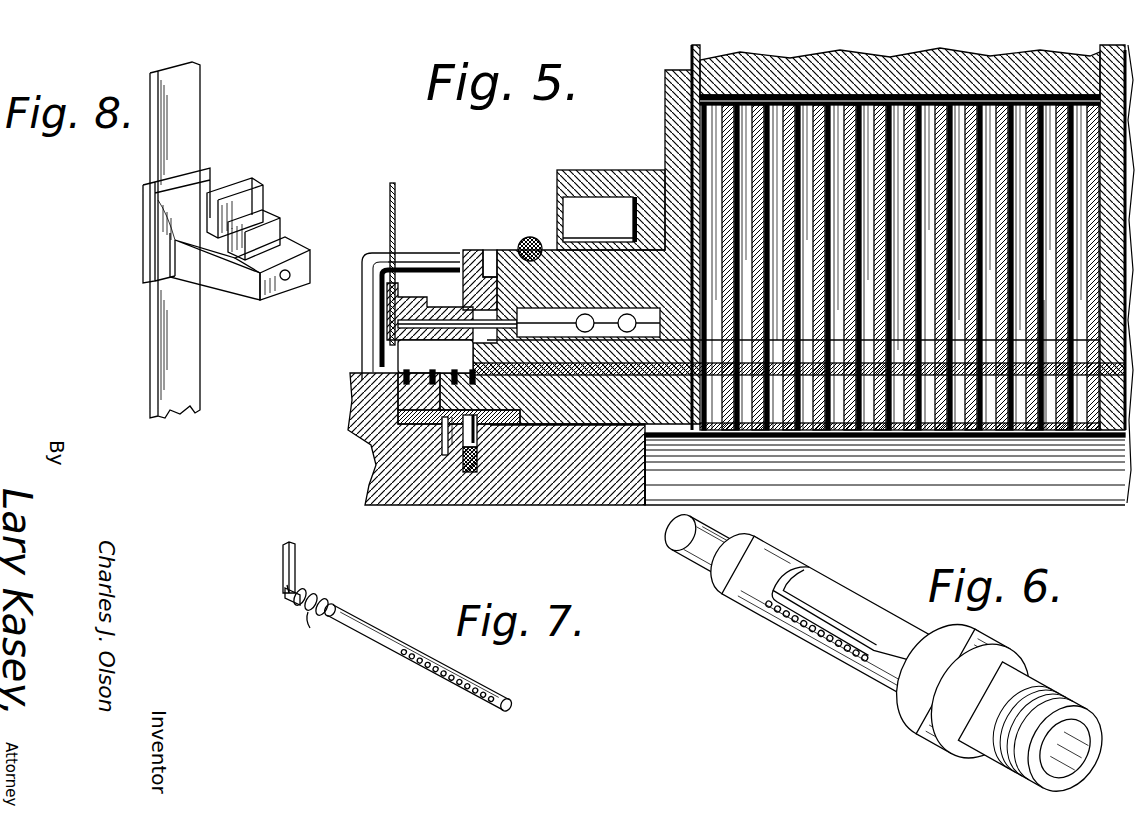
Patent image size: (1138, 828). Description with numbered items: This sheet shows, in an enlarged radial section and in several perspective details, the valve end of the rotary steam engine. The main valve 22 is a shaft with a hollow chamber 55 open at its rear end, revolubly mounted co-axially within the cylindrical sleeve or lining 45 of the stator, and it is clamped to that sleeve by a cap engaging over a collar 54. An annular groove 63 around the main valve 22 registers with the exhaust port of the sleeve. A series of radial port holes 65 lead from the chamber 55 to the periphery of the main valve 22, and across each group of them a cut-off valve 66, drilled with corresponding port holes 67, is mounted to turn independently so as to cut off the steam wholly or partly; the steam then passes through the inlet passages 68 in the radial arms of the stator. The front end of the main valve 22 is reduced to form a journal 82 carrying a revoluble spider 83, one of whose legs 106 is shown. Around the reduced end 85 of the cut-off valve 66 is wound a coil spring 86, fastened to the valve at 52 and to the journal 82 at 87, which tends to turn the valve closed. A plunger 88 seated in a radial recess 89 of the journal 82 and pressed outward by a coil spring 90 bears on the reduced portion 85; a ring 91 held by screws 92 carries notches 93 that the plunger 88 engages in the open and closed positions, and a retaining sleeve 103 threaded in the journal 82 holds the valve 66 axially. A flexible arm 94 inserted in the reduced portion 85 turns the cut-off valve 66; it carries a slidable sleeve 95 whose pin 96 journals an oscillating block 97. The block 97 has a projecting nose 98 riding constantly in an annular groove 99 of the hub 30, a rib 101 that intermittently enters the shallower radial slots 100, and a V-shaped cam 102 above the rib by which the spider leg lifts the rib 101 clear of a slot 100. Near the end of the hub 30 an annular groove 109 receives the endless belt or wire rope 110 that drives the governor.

In FIG. 6, the main valve 22 is at (750, 610).
In FIG. 5, the hub 30 is at (641, 267).
In FIG. 5, the cylindrical sleeve or lining 45 is at (1078, 402).
In FIG. 5, the spring attachment point 52 is at (398, 367).
In FIG. 6, the collar 54 is at (948, 740).
In FIG. 5, the hollow chamber 55 is at (646, 490).
In FIG. 6, the hollow chamber 55 is at (1075, 752).
In FIG. 6, the annular groove 63 is at (887, 688).
In FIG. 5, the port holes 65 is at (790, 432).
In FIG. 7, the port holes 65 is at (473, 698).
In FIG. 6, the port holes 65 is at (840, 655).
In FIG. 5, the cut-off valve 66 is at (708, 440).
In FIG. 7, the cut-off valve 66 is at (392, 643).
In FIG. 5, the port holes 67 is at (1042, 402).
In FIG. 5, the inlet passages 68 is at (895, 100).
In FIG. 5, the journal 82 is at (388, 477).
In FIG. 6, the journal 82 is at (710, 563).
In FIG. 5, the spider 83 is at (366, 386).
In FIG. 5, the reduced end 85 is at (413, 367).
In FIG. 7, the reduced end 85 is at (290, 596).
In FIG. 5, the coil spring 86 is at (402, 417).
In FIG. 7, the coil spring 86 is at (325, 600).
In FIG. 5, the spring attachment point 87 is at (437, 450).
In FIG. 5, the plunger 88 is at (463, 432).
In FIG. 5, the radial recess 89 is at (470, 450).
In FIG. 5, the coil spring 90 is at (478, 427).
In FIG. 5, the ring 91 is at (450, 432).
In FIG. 5, the screws 92 is at (437, 369).
In FIG. 5, the notches 93 is at (465, 369).
In FIG. 5, the flexible arm 94 is at (396, 212).
In FIG. 8, the flexible arm 94 is at (152, 323).
In FIG. 7, the flexible arm 94 is at (303, 562).
In FIG. 5, the sleeve 95 is at (388, 292).
In FIG. 8, the sleeve 95 is at (146, 238).
In FIG. 5, the pin 96 is at (428, 318).
In FIG. 8, the block 97 is at (220, 262).
In FIG. 5, the projecting nose 98 is at (435, 356).
In FIG. 8, the projecting nose 98 is at (286, 250).
In FIG. 5, the annular groove 99 is at (453, 318).
In FIG. 5, the radial slots 100 is at (474, 262).
In FIG. 8, the rib 101 is at (290, 222).
In FIG. 8, the V-shaped cam 102 is at (245, 190).
In FIG. 5, the retaining sleeve 103 is at (515, 428).
In FIG. 5, the leg 106 is at (423, 260).
In FIG. 5, the annular groove 109 is at (490, 255).
In FIG. 5, the endless belt or wire rope 110 is at (538, 238).